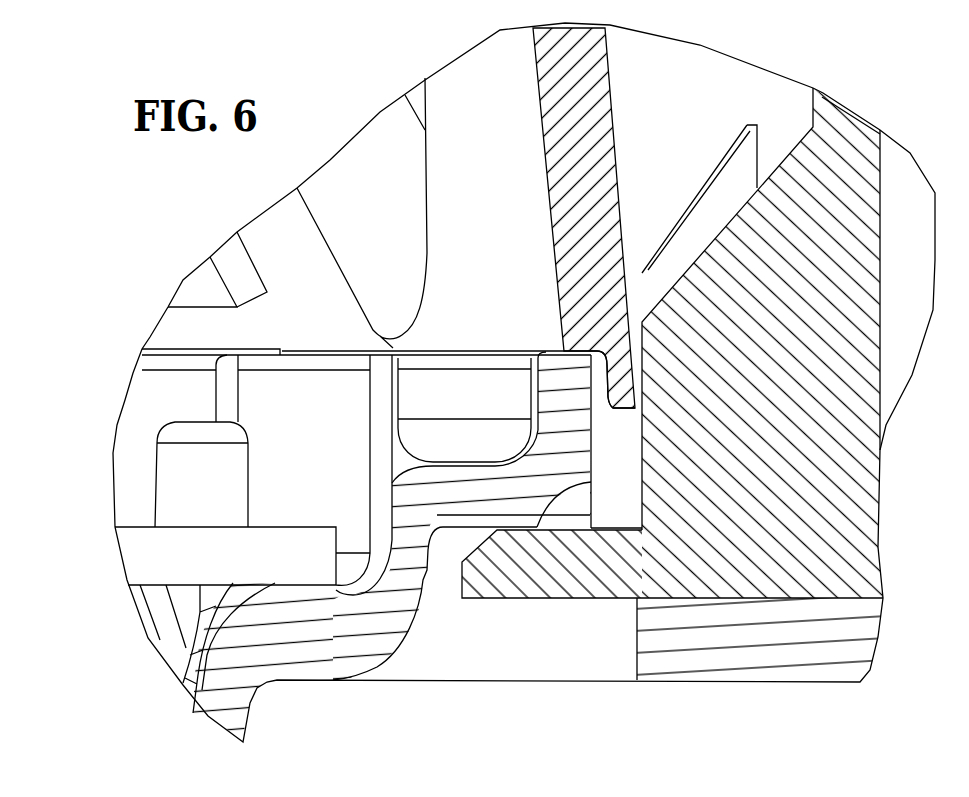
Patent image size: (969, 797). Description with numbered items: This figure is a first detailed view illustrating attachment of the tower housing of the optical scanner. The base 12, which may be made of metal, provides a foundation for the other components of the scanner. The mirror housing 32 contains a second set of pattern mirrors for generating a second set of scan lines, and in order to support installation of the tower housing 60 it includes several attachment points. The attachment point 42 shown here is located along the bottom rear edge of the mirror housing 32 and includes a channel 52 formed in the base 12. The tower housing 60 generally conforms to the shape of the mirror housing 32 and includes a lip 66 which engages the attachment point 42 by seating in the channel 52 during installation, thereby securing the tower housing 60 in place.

The base 12 is at (298, 673).
The mirror housing 32 is at (578, 118).
The attachment point 42 is at (591, 481).
The channel 52 is at (442, 578).
The tower housing 60 is at (840, 489).
The lip 66 is at (562, 572).